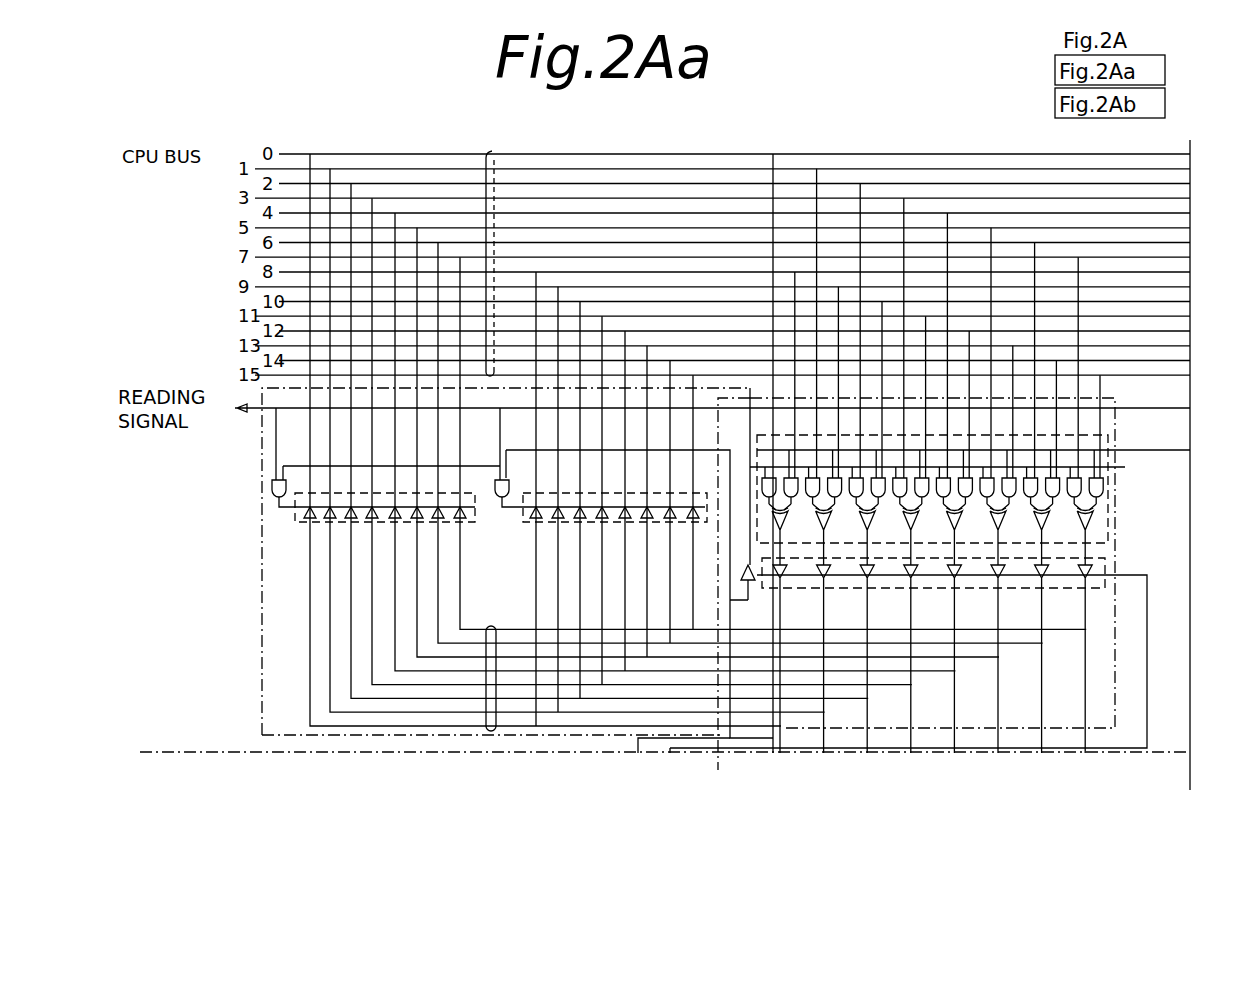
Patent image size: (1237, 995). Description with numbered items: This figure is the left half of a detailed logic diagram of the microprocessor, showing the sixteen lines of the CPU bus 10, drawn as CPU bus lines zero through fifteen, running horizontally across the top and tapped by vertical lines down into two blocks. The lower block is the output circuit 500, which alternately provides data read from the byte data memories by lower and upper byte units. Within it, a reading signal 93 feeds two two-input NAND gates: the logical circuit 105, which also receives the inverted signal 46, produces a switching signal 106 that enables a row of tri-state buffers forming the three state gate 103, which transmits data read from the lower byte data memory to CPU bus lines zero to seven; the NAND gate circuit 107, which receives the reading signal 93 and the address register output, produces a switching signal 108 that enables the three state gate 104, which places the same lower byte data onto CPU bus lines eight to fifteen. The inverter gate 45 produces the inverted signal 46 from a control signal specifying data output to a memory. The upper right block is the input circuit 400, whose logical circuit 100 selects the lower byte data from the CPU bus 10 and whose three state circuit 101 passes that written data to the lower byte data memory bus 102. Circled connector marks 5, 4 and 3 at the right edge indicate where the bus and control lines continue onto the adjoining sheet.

The CPU bus 10 is at (492, 151).
The reading signal 93 is at (273, 452).
The logical circuit 105 is at (272, 490).
The switching signal 106 is at (283, 508).
The three state gate 103 is at (293, 524).
The two-input NAND gate circuit 107 is at (498, 498).
The switching signal 108 is at (505, 510).
The three state gate 104 is at (525, 524).
The lower byte data memory bus 102 is at (489, 626).
The inverter gate 45 is at (908, 568).
The inverted signal 46 is at (1129, 470).
The logical circuit 100 is at (1112, 522).
The three state circuit 101 is at (1105, 588).
The input circuit 400 is at (1115, 710).
The output circuit 500 is at (262, 705).
The CPU bus 5 is at (1192, 150).
The reading signal 4 is at (729, 408).
The control line 3 is at (1200, 447).